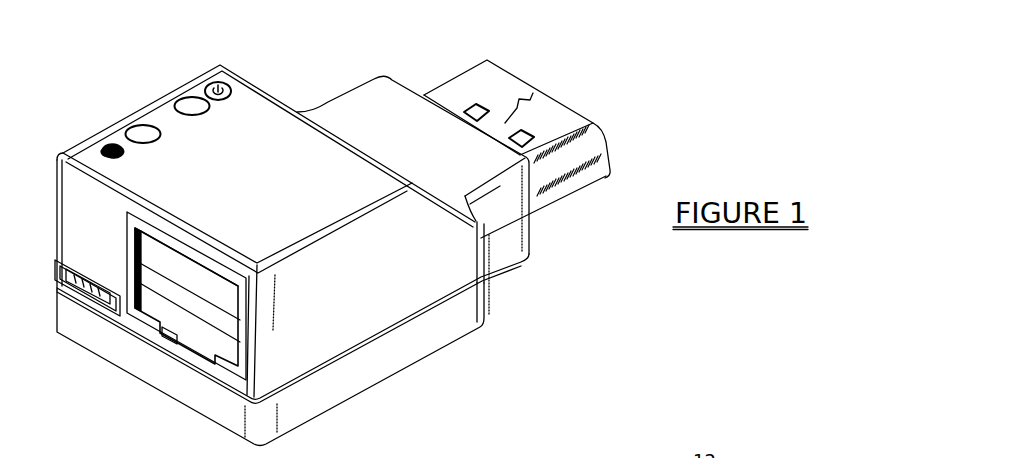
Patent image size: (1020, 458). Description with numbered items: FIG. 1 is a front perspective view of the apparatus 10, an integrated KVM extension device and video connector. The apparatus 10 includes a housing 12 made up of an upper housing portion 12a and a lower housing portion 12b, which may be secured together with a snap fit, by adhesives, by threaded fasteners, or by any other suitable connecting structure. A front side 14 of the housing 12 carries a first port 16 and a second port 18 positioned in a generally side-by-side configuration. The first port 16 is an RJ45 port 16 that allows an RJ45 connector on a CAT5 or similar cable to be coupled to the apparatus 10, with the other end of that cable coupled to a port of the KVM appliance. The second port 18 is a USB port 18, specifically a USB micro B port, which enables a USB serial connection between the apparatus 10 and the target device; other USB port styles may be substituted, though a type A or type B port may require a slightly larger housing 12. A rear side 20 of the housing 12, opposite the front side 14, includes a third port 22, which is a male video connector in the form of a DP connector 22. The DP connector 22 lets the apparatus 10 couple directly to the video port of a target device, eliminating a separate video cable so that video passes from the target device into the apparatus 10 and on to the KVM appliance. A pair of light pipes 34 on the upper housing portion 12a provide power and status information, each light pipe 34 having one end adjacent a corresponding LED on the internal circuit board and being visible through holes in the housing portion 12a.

The apparatus 10 is at (567, 58).
The housing 12 is at (243, 81).
The upper housing portion 12a is at (460, 262).
The lower housing portion 12b is at (460, 308).
The front side 14 is at (262, 378).
The RJ45 port 16 is at (198, 334).
The USB port 18 is at (87, 286).
The rear side 20 is at (532, 233).
The DP connector 22 is at (605, 139).
The light pipes 34 is at (141, 127).